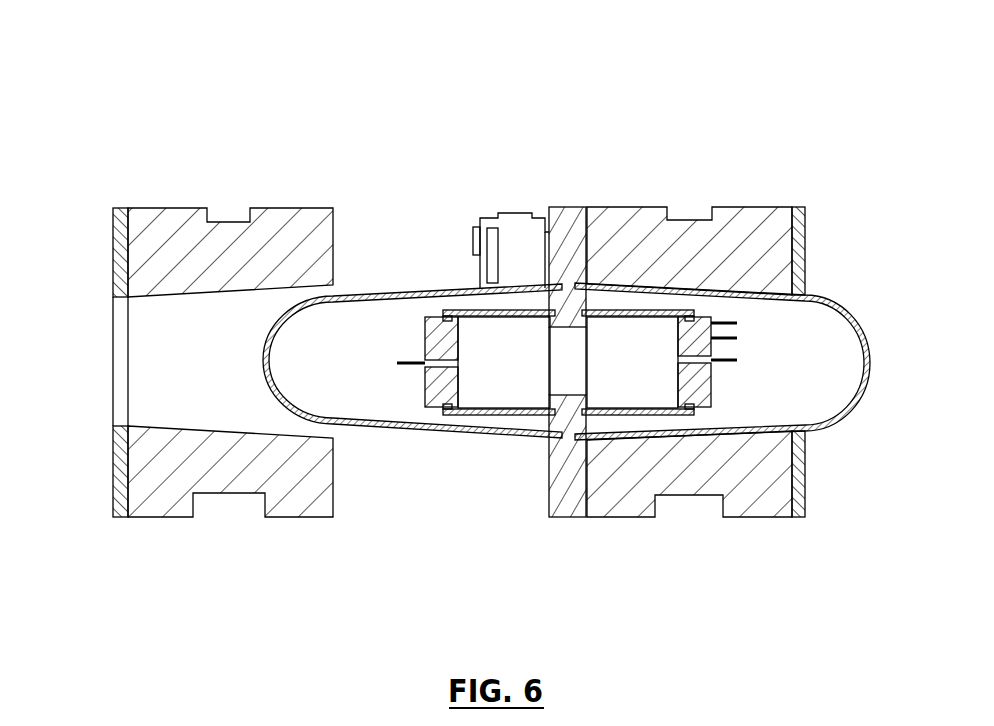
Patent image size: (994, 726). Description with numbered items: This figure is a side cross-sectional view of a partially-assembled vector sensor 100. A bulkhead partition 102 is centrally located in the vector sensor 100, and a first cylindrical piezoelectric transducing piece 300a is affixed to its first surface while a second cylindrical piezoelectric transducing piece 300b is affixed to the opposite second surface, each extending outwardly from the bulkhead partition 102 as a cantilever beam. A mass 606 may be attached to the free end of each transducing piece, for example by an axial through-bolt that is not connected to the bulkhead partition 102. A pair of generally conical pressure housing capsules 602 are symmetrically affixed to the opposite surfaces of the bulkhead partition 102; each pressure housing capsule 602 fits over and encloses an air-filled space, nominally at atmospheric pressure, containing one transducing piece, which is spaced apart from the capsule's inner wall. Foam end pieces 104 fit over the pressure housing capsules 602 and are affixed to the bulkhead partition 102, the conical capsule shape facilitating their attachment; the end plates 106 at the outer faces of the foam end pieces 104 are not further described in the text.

The vector sensor 100 is at (711, 82).
The bulkhead partition 102 is at (570, 223).
The foam end pieces 104 is at (307, 220).
The end plate 106 is at (112, 227).
The first cylindrical piezoelectric transducing piece 300a is at (492, 415).
The second cylindrical piezoelectric transducing piece 300b is at (613, 415).
The pressure housing capsules 602 is at (380, 430).
The mass 606 is at (432, 408).